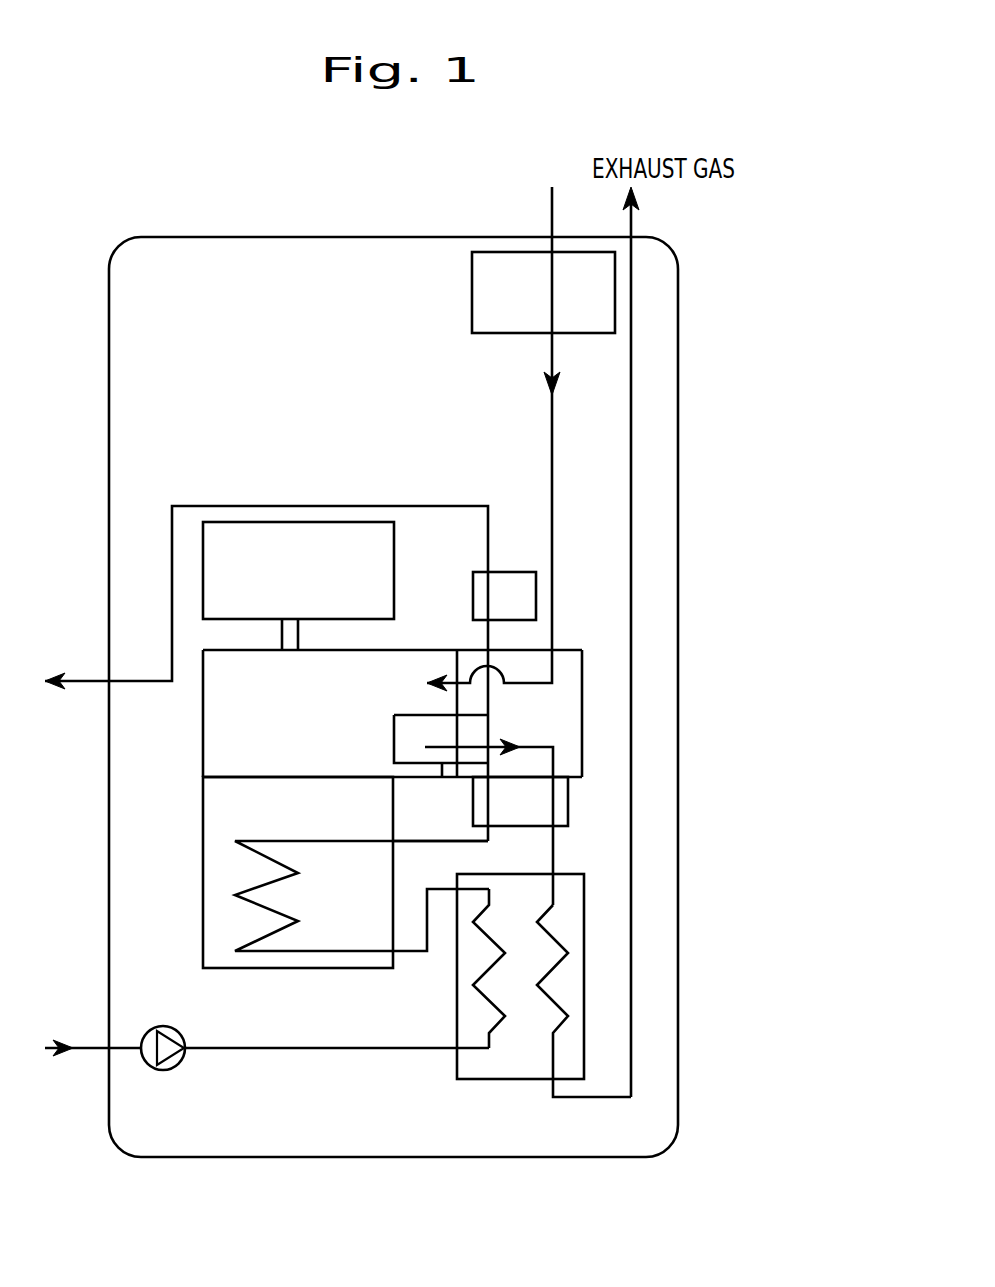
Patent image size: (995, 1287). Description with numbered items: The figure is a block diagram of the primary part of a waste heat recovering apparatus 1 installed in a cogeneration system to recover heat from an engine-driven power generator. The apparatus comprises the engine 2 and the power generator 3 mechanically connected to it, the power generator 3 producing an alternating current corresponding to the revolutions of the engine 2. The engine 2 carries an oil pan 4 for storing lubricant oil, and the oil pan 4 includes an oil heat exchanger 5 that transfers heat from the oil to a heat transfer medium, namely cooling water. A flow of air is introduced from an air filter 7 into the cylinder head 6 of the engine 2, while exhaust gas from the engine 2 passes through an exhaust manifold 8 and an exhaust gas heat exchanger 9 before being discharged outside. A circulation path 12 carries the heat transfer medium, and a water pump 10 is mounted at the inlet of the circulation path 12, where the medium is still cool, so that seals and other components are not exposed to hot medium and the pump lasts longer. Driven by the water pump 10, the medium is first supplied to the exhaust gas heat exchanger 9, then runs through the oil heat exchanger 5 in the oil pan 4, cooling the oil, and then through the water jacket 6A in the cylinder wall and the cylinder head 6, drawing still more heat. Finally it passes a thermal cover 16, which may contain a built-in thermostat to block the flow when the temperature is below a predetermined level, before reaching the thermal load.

The waste heat recovering apparatus 1 is at (95, 395).
The engine 2 is at (203, 747).
The power generator 3 is at (394, 555).
The oil pan 4 is at (203, 823).
The oil heat exchanger 5 is at (283, 951).
The cylinder head 6 is at (575, 650).
The water jacket 6A is at (442, 777).
The air filter 7 is at (482, 333).
The exhaust manifold 8 is at (568, 810).
The exhaust gas heat exchanger 9 is at (560, 874).
The water pump 10 is at (162, 1070).
The circulation path 12 is at (297, 1048).
The thermal cover 16 is at (530, 572).